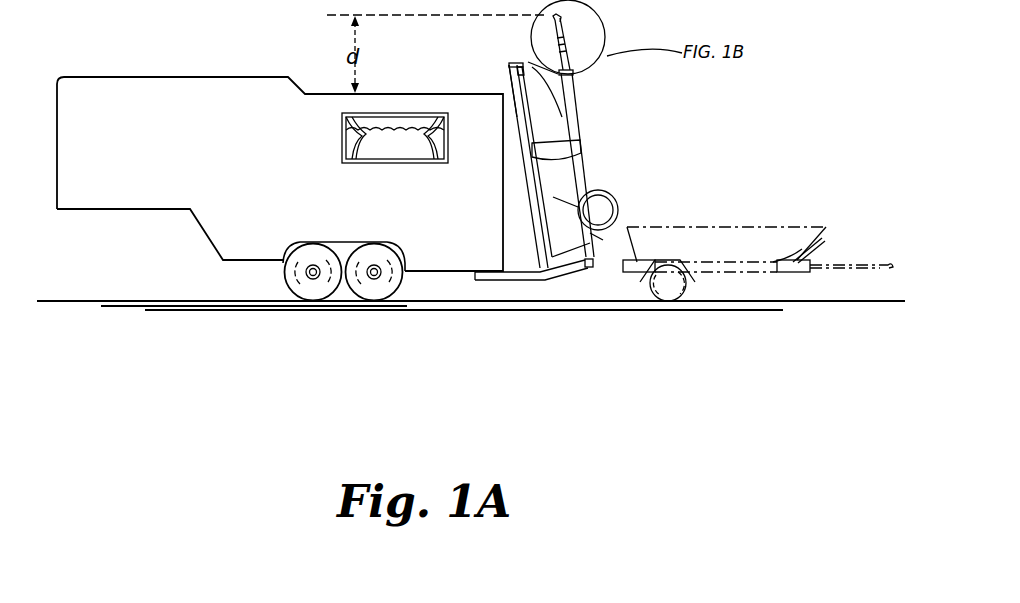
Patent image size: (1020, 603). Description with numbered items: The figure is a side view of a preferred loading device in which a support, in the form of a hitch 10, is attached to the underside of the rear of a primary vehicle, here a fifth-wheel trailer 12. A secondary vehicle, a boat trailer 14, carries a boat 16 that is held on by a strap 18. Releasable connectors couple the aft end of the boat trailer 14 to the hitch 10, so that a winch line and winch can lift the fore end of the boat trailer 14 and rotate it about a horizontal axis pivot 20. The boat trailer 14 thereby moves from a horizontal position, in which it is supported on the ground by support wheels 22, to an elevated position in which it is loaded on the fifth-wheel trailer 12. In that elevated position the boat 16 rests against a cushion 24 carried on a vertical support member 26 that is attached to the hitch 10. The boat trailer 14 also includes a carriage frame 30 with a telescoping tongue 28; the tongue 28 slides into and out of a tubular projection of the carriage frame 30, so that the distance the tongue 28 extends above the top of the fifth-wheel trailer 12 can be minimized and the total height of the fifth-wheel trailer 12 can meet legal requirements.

The hitch 10 is at (520, 280).
The fifth-wheel trailer 12 is at (257, 61).
The boat trailer 14 is at (613, 177).
The boat 16 is at (613, 204).
The strap 18 is at (582, 164).
The horizontal axis pivot 20 is at (602, 282).
The support wheels 22 is at (627, 228).
The cushion 24 is at (517, 63).
The vertical support member 26 is at (501, 144).
The telescoping tongue 28 is at (604, 32).
The carriage frame 30 is at (570, 108).